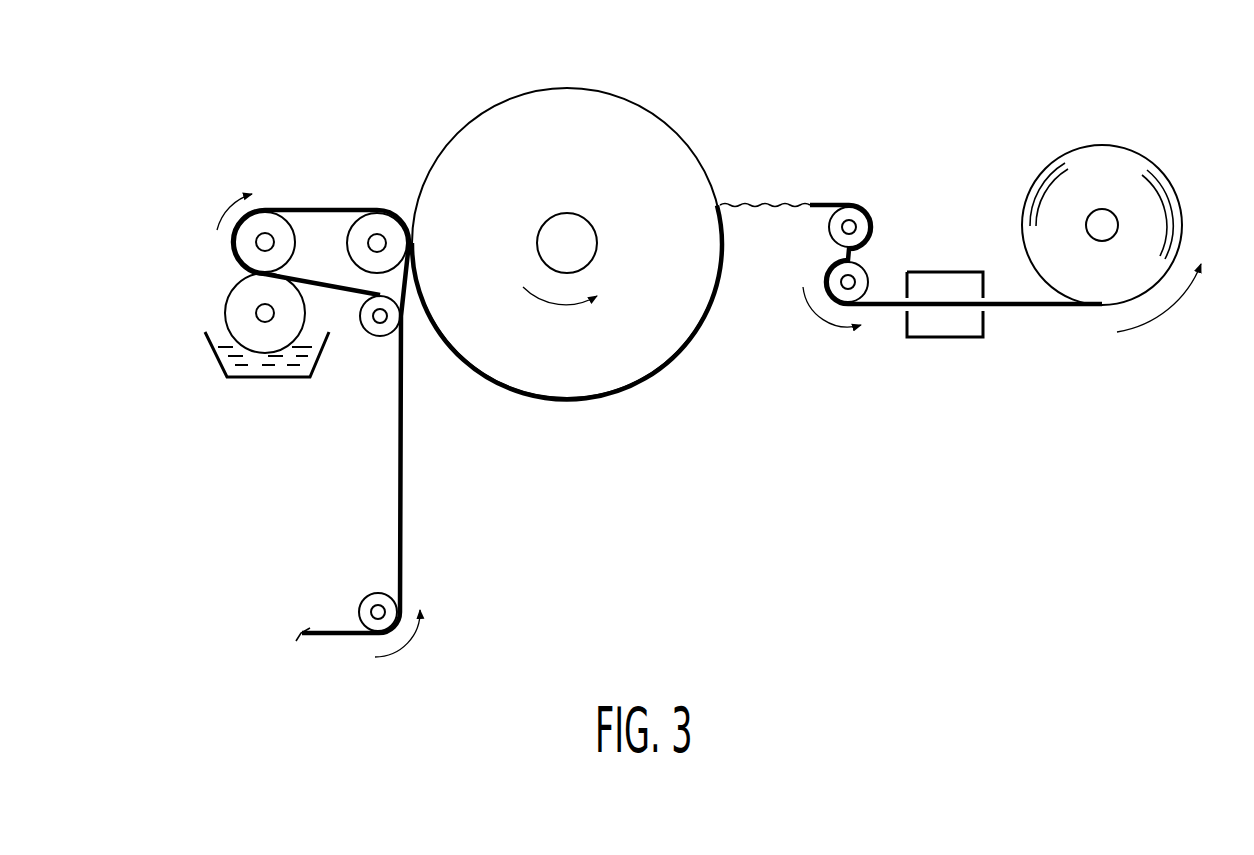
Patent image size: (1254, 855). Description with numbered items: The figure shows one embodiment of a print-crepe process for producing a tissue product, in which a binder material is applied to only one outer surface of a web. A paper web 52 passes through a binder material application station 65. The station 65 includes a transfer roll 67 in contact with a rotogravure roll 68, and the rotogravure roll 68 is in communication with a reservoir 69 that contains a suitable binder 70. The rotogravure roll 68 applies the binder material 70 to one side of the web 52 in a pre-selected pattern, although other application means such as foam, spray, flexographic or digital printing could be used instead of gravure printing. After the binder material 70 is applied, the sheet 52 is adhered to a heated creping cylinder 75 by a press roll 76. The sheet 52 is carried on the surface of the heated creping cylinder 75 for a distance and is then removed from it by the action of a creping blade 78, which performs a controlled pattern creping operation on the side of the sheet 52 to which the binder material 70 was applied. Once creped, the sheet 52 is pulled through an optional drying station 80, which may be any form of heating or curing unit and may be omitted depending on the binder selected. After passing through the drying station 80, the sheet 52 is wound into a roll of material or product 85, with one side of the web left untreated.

The paper web 52 is at (813, 205).
The binder material application station 65 is at (272, 398).
The transfer roll 67 is at (238, 245).
The rotogravure roll 68 is at (230, 298).
The reservoir 69 is at (216, 362).
The binder material 70 is at (308, 358).
The heated creping cylinder 75 is at (607, 372).
The press roll 76 is at (383, 222).
The creping blade 78 is at (725, 193).
The drying station 80 is at (945, 272).
The roll of material or product 85 is at (1097, 162).